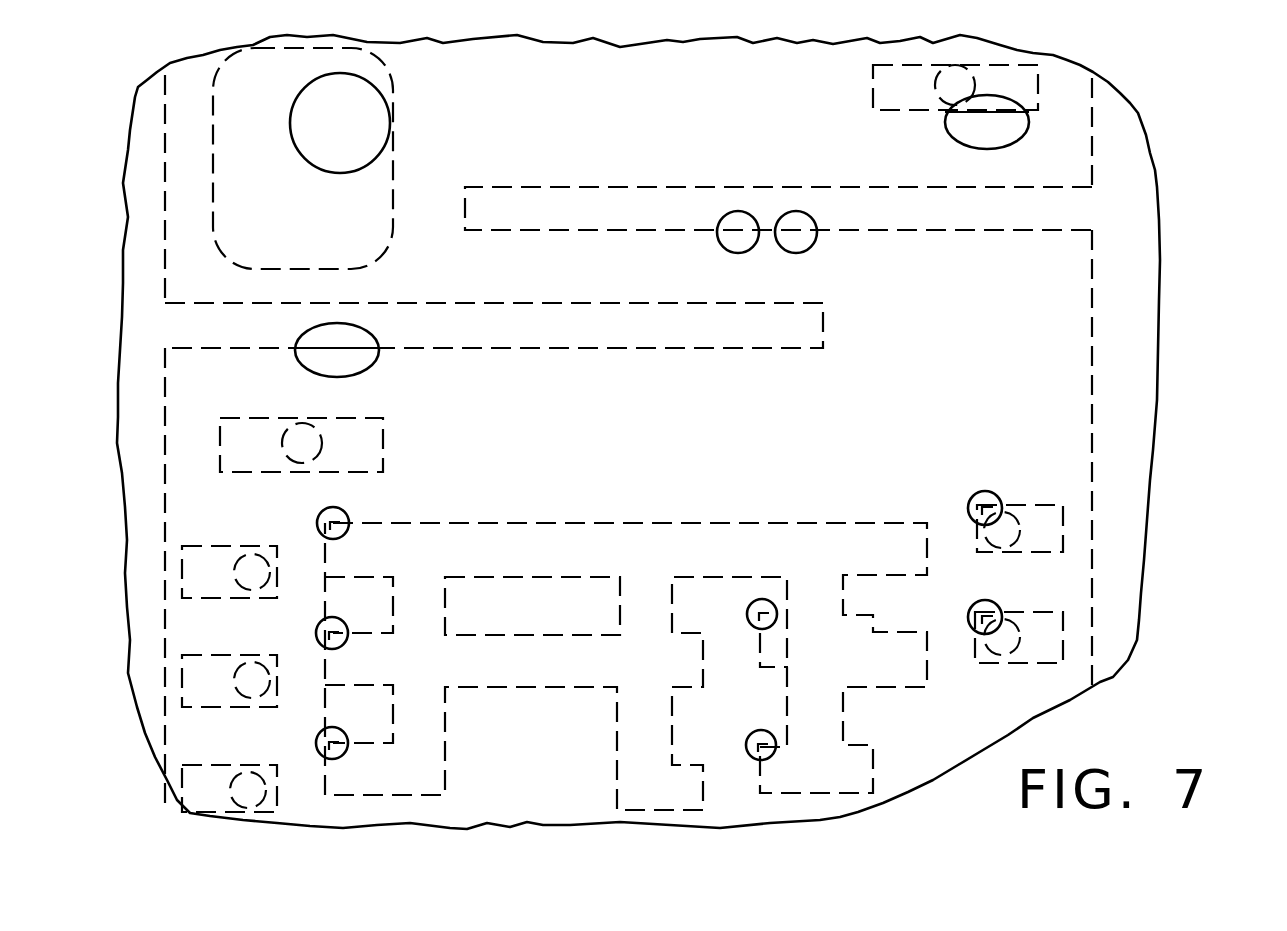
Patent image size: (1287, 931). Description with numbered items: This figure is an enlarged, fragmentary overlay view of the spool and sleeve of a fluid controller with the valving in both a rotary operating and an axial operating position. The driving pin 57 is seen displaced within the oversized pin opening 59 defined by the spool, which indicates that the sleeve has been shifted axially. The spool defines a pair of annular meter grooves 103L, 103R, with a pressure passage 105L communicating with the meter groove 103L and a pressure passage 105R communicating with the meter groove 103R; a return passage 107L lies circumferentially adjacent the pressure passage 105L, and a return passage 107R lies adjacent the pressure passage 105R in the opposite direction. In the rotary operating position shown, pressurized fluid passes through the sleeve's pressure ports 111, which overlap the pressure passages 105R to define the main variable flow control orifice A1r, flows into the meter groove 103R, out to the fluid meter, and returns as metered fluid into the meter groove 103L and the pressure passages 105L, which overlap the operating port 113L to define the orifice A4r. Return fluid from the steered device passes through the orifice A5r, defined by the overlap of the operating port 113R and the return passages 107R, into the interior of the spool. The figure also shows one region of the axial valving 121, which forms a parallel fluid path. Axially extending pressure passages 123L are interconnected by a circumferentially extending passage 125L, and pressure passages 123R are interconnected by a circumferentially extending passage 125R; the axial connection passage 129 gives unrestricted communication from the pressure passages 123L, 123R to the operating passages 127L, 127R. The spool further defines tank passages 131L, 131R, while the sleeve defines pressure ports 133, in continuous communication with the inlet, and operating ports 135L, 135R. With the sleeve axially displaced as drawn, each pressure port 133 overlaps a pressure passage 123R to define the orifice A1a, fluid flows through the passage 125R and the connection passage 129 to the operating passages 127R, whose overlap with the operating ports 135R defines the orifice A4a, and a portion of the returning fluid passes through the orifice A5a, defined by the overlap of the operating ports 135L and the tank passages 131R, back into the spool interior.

The driving pin 57 is at (370, 128).
The pin opening 59 is at (335, 216).
The meter groove 103L is at (137, 410).
The meter groove 103R is at (1127, 257).
The pressure passage 105L is at (605, 327).
The pressure passage 105R is at (640, 217).
The return passage 107L is at (302, 453).
The return passage 107R is at (940, 85).
The pressure ports 111 is at (733, 243).
The operating port 113L is at (337, 362).
The operating port 113R is at (983, 136).
The axial valving 121 is at (488, 487).
The pressure passages 123L is at (698, 787).
The pressure passages 123R is at (767, 773).
The circumferentially extending passage 125L is at (637, 600).
The circumferentially extending passage 125R is at (813, 597).
The operating passages 127L is at (910, 663).
The operating passages 127R is at (328, 770).
The axial connection passage 129 is at (707, 554).
The tank passages 131L is at (248, 663).
The tank passages 131R is at (1010, 635).
The pressure ports 133 is at (773, 626).
The operating ports 135L is at (973, 523).
The operating ports 135R is at (318, 640).
The main variable flow control orifice A1r is at (793, 220).
The A1a orifice A1a is at (772, 758).
The variable flow control orifice A4r is at (347, 337).
The A4a orifice A4a is at (338, 528).
The A5r orifice A5r is at (985, 100).
The A5a orifice A5a is at (995, 515).